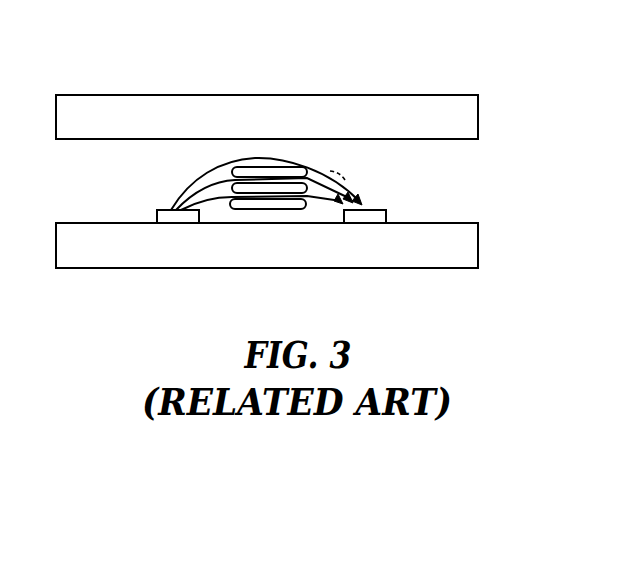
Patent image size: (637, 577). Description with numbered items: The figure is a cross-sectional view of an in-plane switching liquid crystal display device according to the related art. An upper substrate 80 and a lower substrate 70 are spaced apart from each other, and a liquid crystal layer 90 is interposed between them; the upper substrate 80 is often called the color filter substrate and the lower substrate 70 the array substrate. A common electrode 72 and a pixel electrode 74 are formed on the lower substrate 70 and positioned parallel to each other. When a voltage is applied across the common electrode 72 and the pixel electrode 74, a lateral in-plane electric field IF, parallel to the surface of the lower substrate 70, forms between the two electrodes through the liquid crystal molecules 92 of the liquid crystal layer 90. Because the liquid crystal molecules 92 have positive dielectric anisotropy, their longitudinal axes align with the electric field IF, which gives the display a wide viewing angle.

The lower substrate 70 is at (501, 223).
The common electrode 72 is at (176, 218).
The pixel electrode 74 is at (370, 218).
The upper substrate 80 is at (501, 93).
The liquid crystal layer 90 is at (501, 140).
The liquid crystal molecules 92 is at (262, 206).
The in-plane electric field IF is at (325, 198).